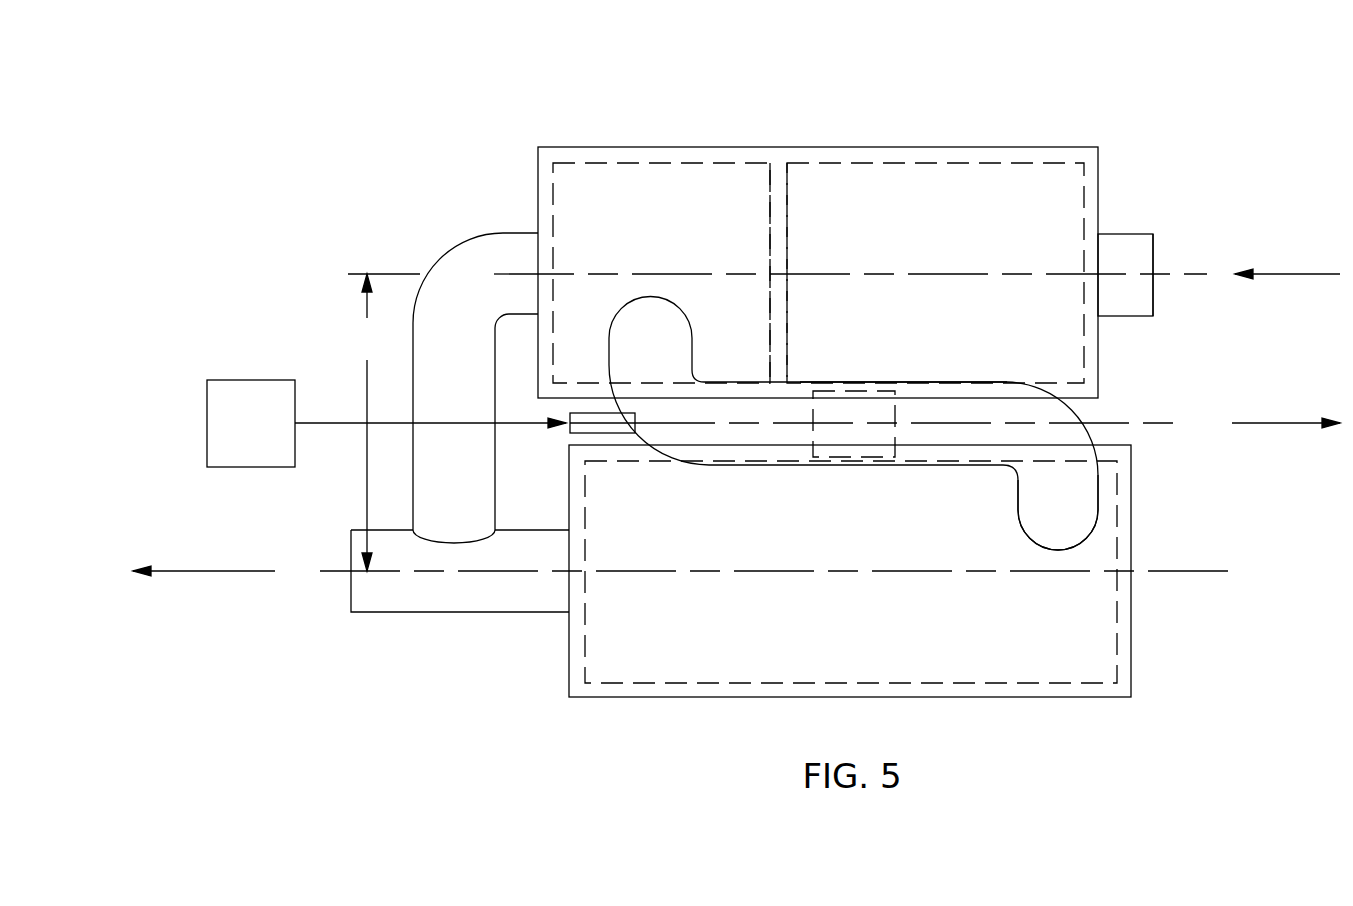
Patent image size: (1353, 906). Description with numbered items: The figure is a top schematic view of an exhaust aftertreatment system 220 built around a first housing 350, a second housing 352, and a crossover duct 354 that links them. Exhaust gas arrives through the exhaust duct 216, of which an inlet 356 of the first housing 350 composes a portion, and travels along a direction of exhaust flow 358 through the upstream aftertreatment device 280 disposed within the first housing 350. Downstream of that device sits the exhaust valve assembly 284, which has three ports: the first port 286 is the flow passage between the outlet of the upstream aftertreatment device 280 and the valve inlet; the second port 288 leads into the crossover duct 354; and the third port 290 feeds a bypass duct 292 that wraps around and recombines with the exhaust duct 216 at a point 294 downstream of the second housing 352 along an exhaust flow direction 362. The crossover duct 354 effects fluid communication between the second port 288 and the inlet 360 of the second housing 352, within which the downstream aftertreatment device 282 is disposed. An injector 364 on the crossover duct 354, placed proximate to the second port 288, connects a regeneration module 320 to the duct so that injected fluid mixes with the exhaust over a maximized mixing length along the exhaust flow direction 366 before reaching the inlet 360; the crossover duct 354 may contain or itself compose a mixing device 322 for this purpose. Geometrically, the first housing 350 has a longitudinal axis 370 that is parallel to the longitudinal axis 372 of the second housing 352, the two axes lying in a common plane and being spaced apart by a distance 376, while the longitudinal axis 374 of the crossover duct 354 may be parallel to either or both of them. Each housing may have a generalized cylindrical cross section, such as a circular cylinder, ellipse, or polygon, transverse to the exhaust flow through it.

The exhaust aftertreatment system 220 is at (357, 108).
The exhaust duct 216 is at (1132, 234).
The upstream aftertreatment device 280 is at (972, 162).
The downstream aftertreatment device 282 is at (648, 683).
The exhaust valve assembly 284 is at (667, 162).
The first port 286 is at (770, 246).
The second port 288 is at (690, 303).
The third port 290 is at (553, 243).
The bypass duct 292 is at (470, 245).
The point 294 is at (442, 545).
The regeneration module 320 is at (232, 435).
The mixing device 322 is at (841, 457).
The first housing 350 is at (1082, 147).
The second housing 352 is at (1140, 655).
The crossover duct 354 is at (943, 397).
The inlet 356 is at (1153, 241).
The direction of exhaust flow 358 is at (1300, 274).
The inlet 360 is at (1020, 525).
The exhaust flow direction 362 is at (202, 571).
The injector 364 is at (610, 433).
The exhaust flow direction 366 is at (1266, 423).
The longitudinal axis 370 is at (973, 274).
The longitudinal axis 372 is at (888, 572).
The longitudinal axis 374 is at (1163, 423).
The distance 376 is at (381, 422).